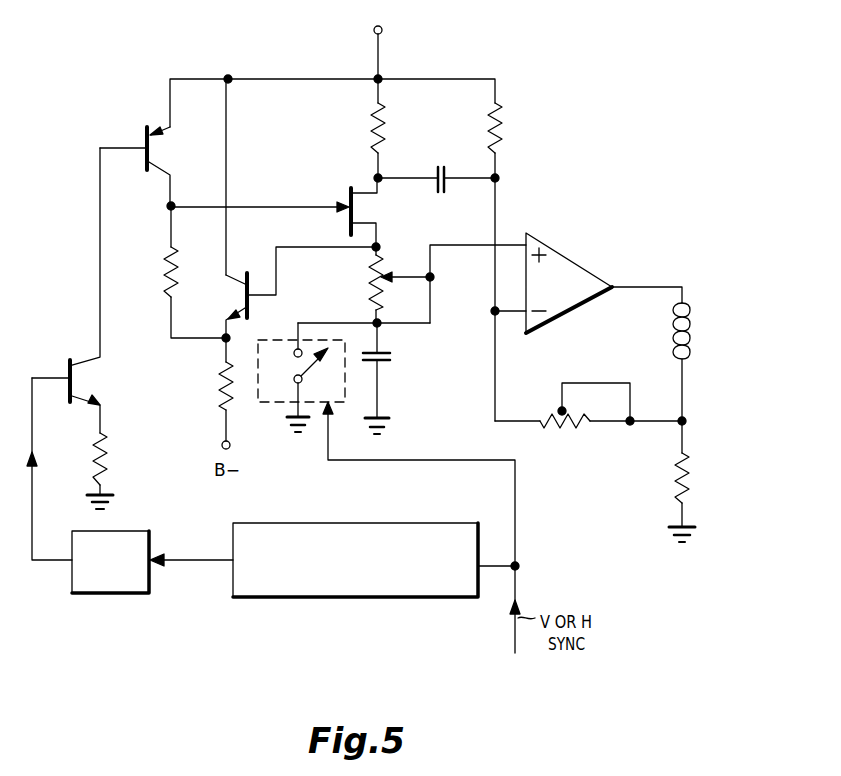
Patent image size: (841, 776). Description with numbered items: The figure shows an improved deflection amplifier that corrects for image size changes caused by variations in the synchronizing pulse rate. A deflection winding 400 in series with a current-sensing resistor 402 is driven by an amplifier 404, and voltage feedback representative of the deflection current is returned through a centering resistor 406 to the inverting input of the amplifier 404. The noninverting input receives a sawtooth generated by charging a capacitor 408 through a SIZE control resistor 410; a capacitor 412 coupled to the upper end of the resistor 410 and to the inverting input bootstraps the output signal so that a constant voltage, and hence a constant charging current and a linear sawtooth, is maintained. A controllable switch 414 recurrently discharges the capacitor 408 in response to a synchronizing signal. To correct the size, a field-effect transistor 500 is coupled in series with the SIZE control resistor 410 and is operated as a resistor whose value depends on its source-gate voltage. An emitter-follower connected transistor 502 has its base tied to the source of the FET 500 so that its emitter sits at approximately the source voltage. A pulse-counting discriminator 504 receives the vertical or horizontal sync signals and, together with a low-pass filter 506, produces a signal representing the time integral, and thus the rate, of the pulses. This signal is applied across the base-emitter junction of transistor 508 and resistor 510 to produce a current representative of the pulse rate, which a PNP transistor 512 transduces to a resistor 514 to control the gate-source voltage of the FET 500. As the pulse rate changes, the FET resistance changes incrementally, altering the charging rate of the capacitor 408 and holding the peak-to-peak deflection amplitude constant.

The deflection winding 400 is at (690, 352).
The current-sensing resistor 402 is at (690, 475).
The amplifier 404 is at (564, 257).
The centering resistor 406 is at (556, 428).
The capacitor 408 is at (392, 357).
The SIZE control resistor 410 is at (370, 284).
The capacitor 412 is at (440, 166).
The controllable switch 414 is at (275, 403).
The field-effect transistor 500 is at (349, 192).
The emitter-follower connected transistor 502 is at (243, 300).
The pulse-counting discriminator 504 is at (395, 598).
The low-pass filter 506 is at (152, 547).
The transistor 508 is at (68, 362).
The resistor 510 is at (110, 461).
The PNP transistor 512 is at (145, 133).
The resistor 514 is at (168, 280).